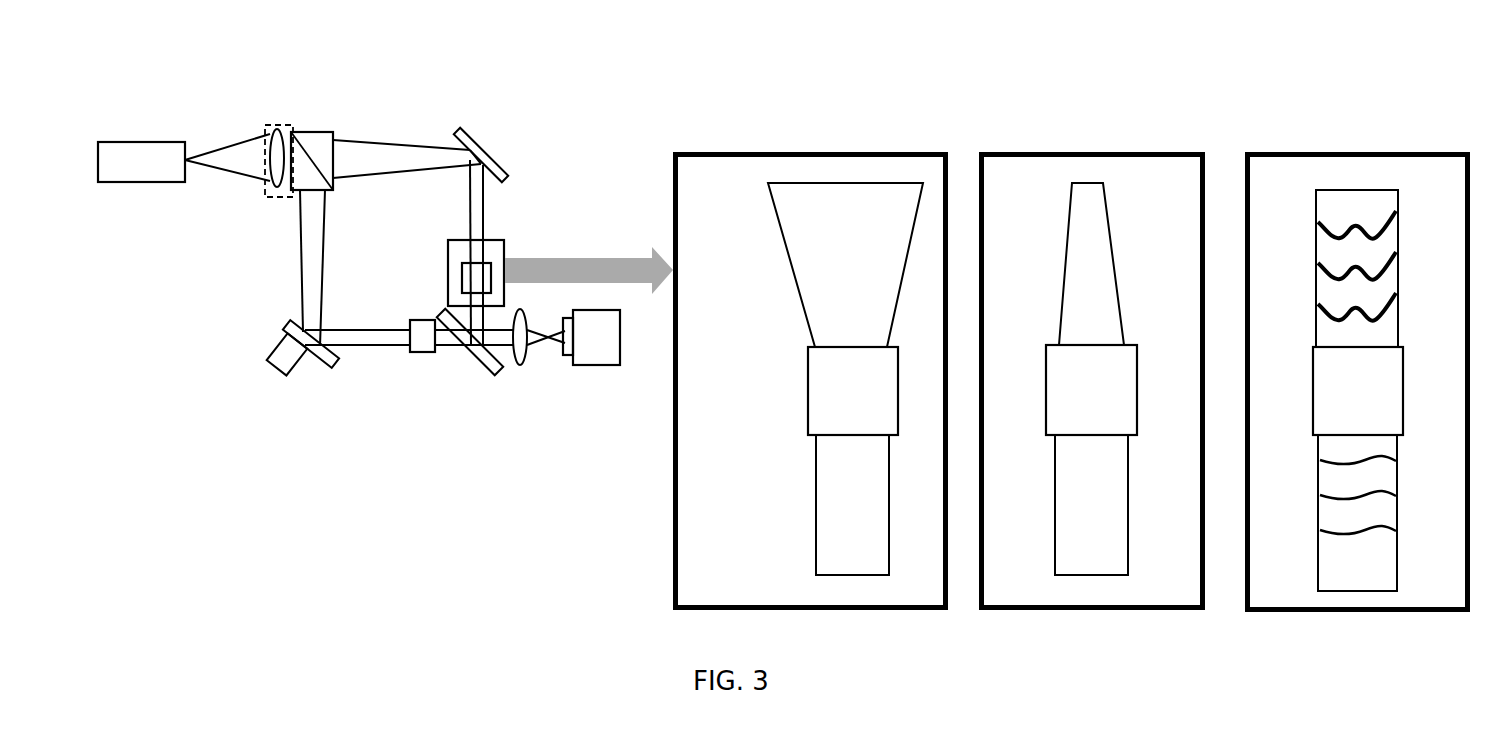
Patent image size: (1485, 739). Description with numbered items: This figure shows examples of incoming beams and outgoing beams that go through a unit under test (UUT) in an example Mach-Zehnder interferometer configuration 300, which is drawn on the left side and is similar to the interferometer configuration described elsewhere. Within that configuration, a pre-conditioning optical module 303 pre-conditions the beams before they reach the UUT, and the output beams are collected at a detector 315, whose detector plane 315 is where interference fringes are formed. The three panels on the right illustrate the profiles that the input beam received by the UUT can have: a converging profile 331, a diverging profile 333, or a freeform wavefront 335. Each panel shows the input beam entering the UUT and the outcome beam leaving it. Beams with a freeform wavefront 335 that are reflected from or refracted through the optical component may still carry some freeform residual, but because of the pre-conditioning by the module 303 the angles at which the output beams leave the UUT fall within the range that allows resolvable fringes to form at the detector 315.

The Mach-Zehnder interferometer configuration 300 is at (181, 82).
The pre-conditioning optical module 303 is at (266, 197).
The detector 315 is at (590, 360).
The converging profile 331 is at (743, 201).
The diverging profile 333 is at (1055, 201).
The freeform wavefront 335 is at (1303, 201).